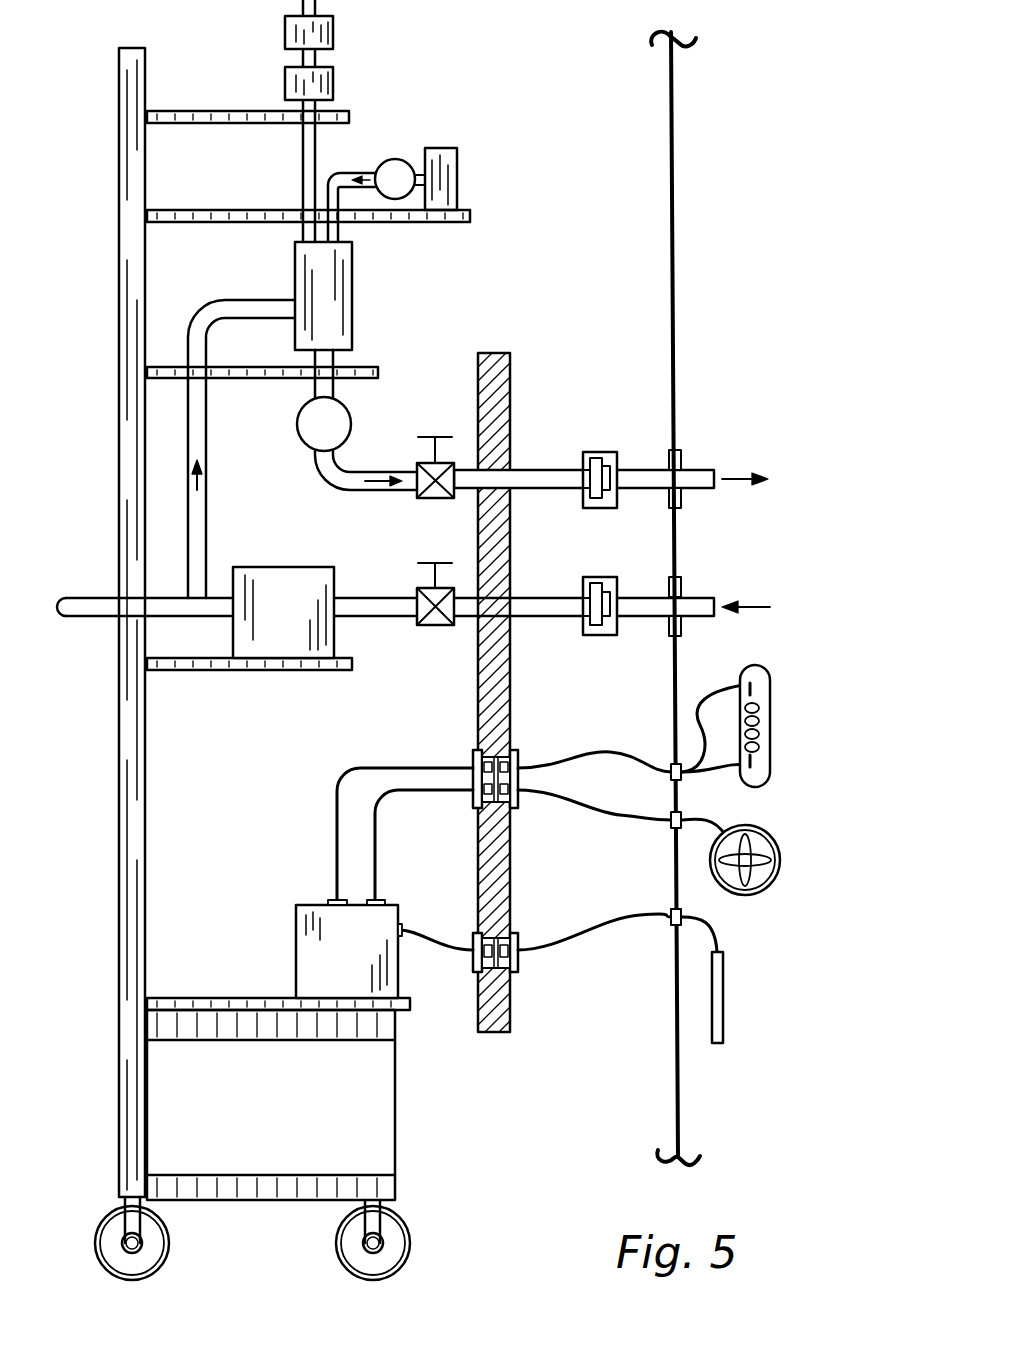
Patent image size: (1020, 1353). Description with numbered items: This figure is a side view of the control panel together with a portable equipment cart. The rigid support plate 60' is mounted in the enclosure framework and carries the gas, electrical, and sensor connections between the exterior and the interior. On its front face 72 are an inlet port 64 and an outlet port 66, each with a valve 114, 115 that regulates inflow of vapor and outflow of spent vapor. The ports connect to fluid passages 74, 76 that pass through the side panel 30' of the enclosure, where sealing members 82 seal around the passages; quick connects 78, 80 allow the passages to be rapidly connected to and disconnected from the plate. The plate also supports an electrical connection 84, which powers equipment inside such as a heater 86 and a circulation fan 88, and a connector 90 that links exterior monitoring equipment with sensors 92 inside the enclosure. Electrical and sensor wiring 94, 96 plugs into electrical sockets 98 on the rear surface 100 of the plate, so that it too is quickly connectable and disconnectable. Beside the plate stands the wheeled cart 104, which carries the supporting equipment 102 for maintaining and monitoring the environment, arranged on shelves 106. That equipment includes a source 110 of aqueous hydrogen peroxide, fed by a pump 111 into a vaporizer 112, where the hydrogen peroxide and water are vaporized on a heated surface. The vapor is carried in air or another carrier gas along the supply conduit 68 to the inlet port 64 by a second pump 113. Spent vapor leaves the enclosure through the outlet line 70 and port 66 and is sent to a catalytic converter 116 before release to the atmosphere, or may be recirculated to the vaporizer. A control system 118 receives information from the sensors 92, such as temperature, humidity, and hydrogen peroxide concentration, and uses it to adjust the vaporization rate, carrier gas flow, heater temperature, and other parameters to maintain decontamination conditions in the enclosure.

The side panel 30' is at (648, 598).
The rigid support plate 60' is at (555, 1026).
The inlet port 64 is at (400, 444).
The outlet port 66 is at (437, 600).
The supply conduit 68 is at (415, 484).
The outlet line 70 is at (365, 598).
The front face 72 is at (478, 887).
The fluid passage 74 is at (704, 470).
The fluid passage 76 is at (698, 598).
The quick connect 78 is at (600, 452).
The quick connect 80 is at (604, 577).
The sealing member 82 is at (683, 498).
The electrical connection 84 is at (473, 760).
The heater 86 is at (770, 740).
The circulation fan 88 is at (776, 876).
The connector 90 is at (520, 960).
The sensor 92 is at (725, 1008).
The electrical wiring 94 is at (605, 754).
The sensor wiring 96 is at (594, 928).
The electrical socket 98 is at (520, 798).
The rear surface 100 is at (513, 382).
The supporting equipment 102 is at (330, 684).
The wheeled cart 104 is at (400, 1109).
The shelf 106 is at (240, 224).
The source of liquid hydrogen peroxide 110 is at (455, 172).
The pump 111 is at (403, 161).
The vaporizer 112 is at (352, 312).
The pump 113 is at (300, 428).
The valve 114 is at (440, 437).
The valve 115 is at (448, 537).
The catalytic converter 116 is at (283, 570).
The control system 118 is at (296, 940).